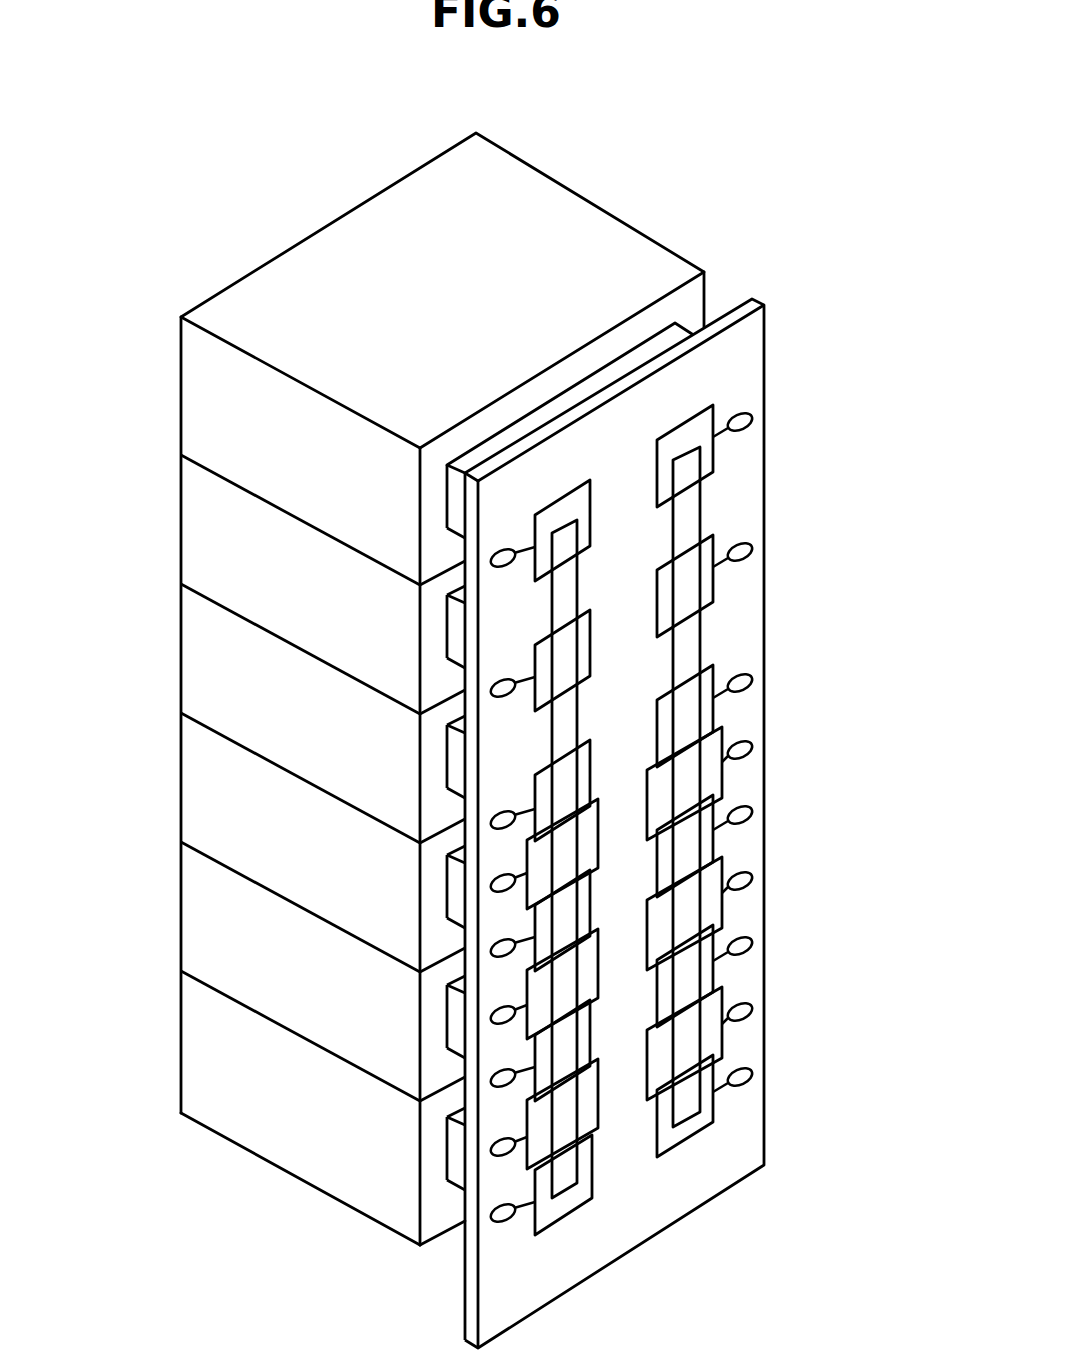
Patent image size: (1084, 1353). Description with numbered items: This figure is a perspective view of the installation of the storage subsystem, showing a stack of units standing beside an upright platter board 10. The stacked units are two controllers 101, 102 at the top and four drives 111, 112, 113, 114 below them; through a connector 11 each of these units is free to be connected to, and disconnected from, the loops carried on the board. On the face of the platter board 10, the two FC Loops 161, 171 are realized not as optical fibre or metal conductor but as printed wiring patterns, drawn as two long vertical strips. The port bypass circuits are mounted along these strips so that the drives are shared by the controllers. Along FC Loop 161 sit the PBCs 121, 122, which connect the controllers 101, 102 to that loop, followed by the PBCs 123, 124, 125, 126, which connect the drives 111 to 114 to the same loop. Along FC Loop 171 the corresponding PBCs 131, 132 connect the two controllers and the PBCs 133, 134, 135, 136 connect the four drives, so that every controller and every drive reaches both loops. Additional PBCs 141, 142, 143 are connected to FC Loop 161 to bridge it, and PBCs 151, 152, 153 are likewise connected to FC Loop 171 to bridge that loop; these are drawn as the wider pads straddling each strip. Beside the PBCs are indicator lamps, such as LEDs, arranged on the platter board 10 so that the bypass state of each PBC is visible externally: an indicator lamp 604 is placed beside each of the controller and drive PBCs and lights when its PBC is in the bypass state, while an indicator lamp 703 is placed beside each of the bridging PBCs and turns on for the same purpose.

The platter board 10 is at (760, 345).
The connector 11 is at (460, 1040).
The controller 101 is at (202, 411).
The controller 102 is at (202, 539).
The drive 111 is at (202, 664).
The drive 112 is at (202, 794).
The drive 113 is at (202, 919).
The drive 114 is at (202, 1044).
The PBC 121 is at (707, 432).
The PBC 122 is at (707, 596).
The PBC 123 is at (708, 690).
The PBC 124 is at (708, 815).
The PBC 125 is at (708, 945).
The PBC 126 is at (708, 1075).
The PBC 131 is at (562, 502).
The PBC 132 is at (588, 656).
The PBC 133 is at (588, 762).
The PBC 134 is at (588, 898).
The PBC 135 is at (588, 1027).
The PBC 136 is at (590, 1185).
The PBC 141 is at (715, 750).
The PBC 142 is at (715, 880).
The PBC 143 is at (715, 1010).
The PBC 151 is at (585, 805).
The PBC 152 is at (585, 941).
The PBC 153 is at (585, 1075).
The FC Loop 161 is at (703, 508).
The FC Loop 171 is at (584, 590).
The indicator lamp 604 is at (503, 550).
The indicator lamp 703 is at (501, 876).